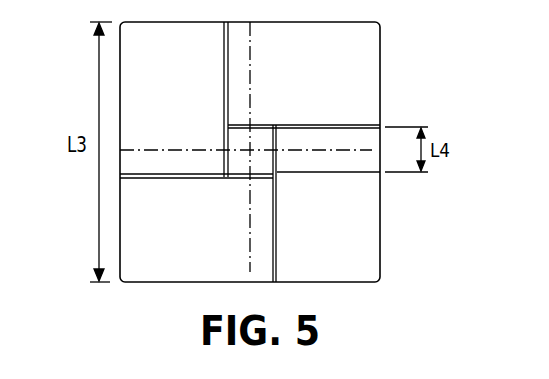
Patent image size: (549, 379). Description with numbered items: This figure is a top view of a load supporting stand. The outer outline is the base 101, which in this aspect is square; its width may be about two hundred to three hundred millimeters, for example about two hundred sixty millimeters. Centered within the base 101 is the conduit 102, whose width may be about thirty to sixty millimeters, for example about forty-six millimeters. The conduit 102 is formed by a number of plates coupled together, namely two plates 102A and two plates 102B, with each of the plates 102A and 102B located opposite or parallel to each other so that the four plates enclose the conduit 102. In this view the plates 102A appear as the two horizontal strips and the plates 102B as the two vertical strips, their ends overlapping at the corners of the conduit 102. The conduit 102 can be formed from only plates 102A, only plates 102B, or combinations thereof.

The base 101 is at (370, 207).
The conduit 102 is at (222, 143).
The plate 102A is at (313, 125).
The plate 102B is at (224, 88).